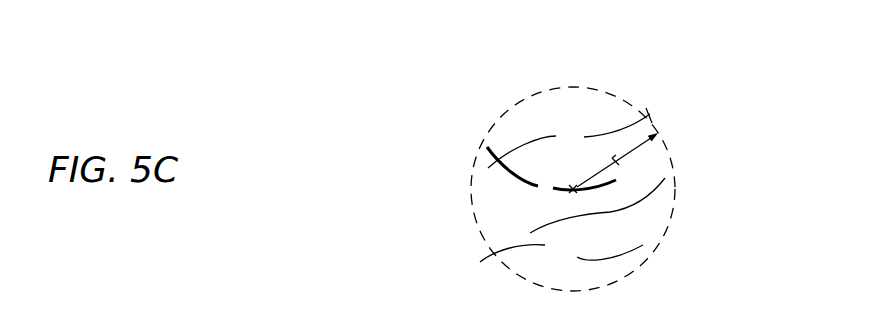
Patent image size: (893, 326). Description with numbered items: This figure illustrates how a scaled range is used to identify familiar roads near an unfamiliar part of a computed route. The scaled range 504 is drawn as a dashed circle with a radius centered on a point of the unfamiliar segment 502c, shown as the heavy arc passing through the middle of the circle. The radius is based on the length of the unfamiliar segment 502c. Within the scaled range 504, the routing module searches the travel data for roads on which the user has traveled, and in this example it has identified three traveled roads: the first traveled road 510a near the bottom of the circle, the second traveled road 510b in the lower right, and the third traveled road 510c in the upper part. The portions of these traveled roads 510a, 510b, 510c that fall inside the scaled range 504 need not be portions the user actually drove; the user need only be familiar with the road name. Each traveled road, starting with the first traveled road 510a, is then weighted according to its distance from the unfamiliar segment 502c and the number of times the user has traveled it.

The scaled range 504 is at (507, 110).
The traveled road TR3 510c is at (620, 118).
The unfamiliar segment 502c is at (512, 188).
The traveled road TR2 510b is at (660, 199).
The traveled road TR1 510a is at (514, 259).